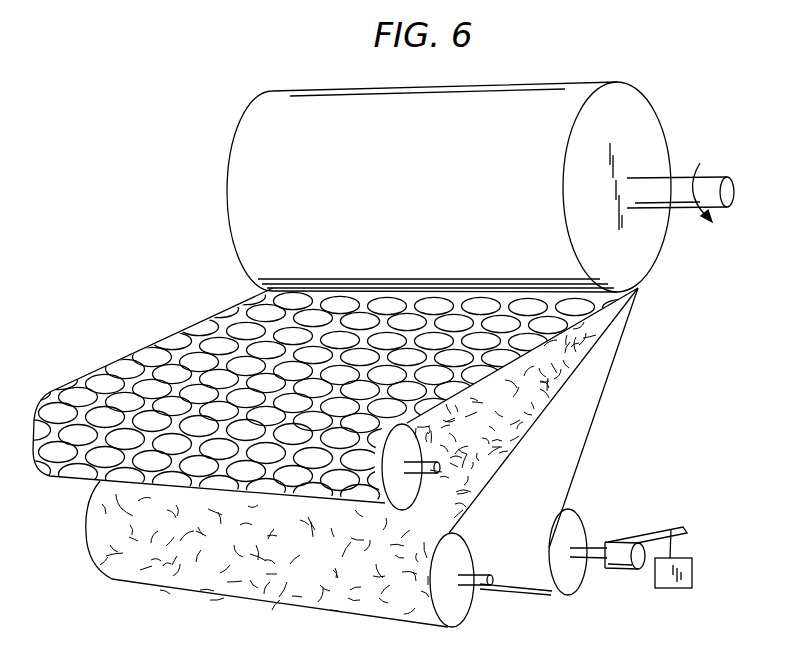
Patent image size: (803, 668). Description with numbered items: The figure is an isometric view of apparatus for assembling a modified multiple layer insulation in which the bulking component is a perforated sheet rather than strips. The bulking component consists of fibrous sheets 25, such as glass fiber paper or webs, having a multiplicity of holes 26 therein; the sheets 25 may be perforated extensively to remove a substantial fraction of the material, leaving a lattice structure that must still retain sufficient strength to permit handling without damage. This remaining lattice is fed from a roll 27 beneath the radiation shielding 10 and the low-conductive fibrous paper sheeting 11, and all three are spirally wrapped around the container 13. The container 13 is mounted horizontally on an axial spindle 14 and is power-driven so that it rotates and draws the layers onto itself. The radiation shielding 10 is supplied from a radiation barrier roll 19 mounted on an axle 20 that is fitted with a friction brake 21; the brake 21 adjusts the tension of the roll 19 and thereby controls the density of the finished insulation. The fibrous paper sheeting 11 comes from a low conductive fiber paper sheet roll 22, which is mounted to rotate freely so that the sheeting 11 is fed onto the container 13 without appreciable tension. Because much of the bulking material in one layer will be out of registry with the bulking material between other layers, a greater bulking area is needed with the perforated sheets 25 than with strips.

The radiation shielding 10 is at (571, 462).
The low-conductive fibrous paper sheeting 11 is at (533, 393).
The container 13 is at (640, 132).
The axial spindle 14 is at (718, 183).
The radiation barrier roll 19 is at (572, 583).
The axle 20 is at (592, 556).
The friction brake 21 is at (687, 508).
The low conductive fiber paper sheet roll 22 is at (457, 610).
The fibrous sheets 25 is at (168, 346).
The holes 26 is at (272, 291).
The roll 27 is at (410, 450).